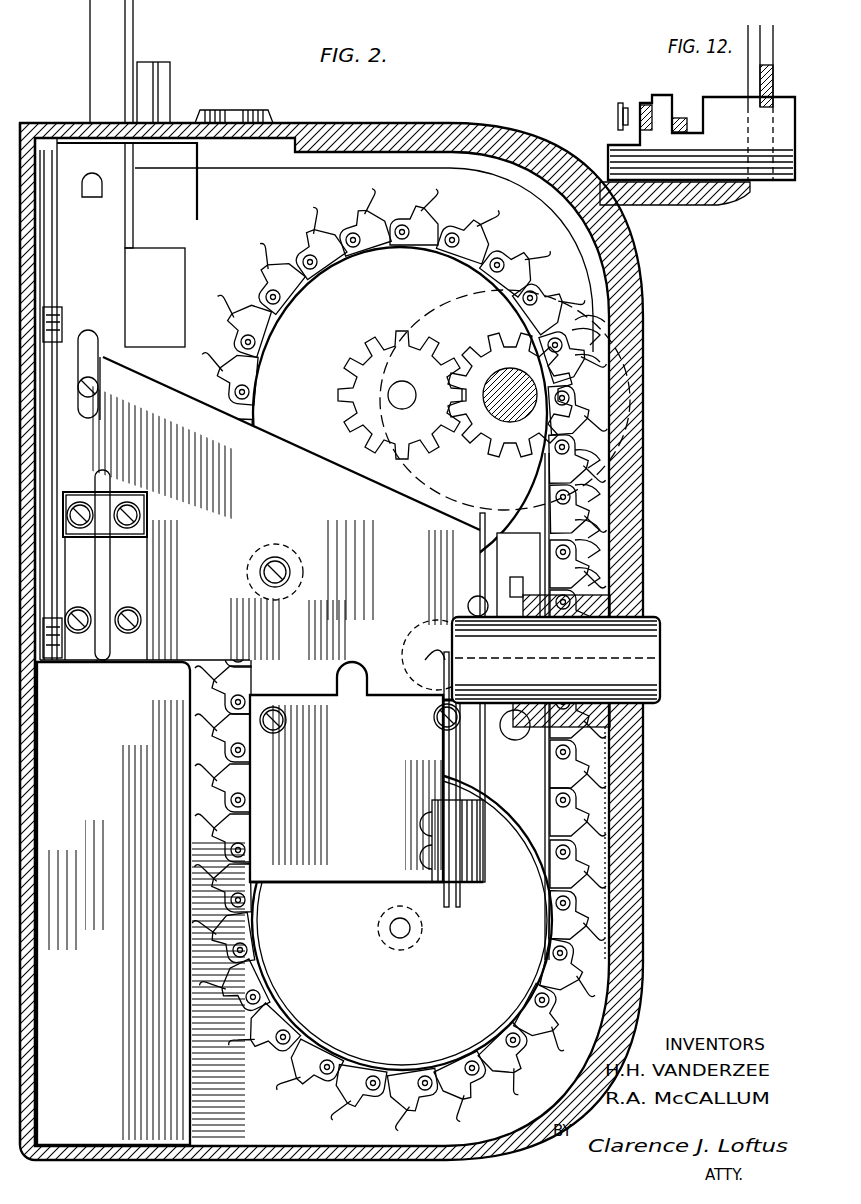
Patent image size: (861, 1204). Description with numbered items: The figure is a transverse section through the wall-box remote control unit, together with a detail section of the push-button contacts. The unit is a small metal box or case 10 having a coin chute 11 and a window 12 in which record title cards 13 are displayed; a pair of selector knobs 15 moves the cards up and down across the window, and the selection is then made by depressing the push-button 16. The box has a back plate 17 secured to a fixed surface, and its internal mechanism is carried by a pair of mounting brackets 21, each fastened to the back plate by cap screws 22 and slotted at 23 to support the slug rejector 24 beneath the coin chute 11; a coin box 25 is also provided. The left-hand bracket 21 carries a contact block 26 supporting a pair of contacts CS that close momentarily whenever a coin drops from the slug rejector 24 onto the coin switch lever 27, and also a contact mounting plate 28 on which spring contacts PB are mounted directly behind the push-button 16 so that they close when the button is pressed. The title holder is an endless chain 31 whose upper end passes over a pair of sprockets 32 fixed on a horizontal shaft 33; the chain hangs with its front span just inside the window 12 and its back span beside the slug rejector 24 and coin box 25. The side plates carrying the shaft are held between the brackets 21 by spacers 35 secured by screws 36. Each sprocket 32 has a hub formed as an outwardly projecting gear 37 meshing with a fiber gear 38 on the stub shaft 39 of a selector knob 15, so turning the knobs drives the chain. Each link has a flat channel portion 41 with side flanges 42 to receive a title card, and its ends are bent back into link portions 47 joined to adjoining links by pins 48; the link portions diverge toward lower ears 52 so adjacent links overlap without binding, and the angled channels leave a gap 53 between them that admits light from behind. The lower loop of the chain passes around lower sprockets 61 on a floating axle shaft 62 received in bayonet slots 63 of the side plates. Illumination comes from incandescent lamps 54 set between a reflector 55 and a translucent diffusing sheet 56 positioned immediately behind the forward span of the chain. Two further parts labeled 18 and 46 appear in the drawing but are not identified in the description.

In FIG. 2, the metal box or case 10 is at (618, 246).
In FIG. 12, the metal box or case 10 is at (700, 205).
In FIG. 2, the coin chute 11 is at (90, 33).
In FIG. 2, the window 12 is at (622, 766).
In FIG. 2, the record title cards 13 is at (592, 440).
In FIG. 2, the selector knobs 15 is at (386, 490).
In FIG. 2, the push-button 16 is at (652, 645).
In FIG. 12, the push-button 16 is at (773, 182).
In FIG. 2, the back plate 17 is at (35, 816).
In FIG. 2, the boss 18 is at (234, 118).
In FIG. 2, the mounting brackets 21 is at (210, 561).
In FIG. 2, the cap screws 22 is at (55, 684).
In FIG. 2, the slot 23 is at (98, 392).
In FIG. 2, the slug rejector 24 is at (112, 232).
In FIG. 2, the coin box 25 is at (141, 903).
In FIG. 2, the contact block 26 is at (130, 494).
In FIG. 2, the coin switch lever 27 is at (100, 685).
In FIG. 2, the contact mounting plate 28 is at (310, 880).
In FIG. 2, the endless chain 31 is at (372, 210).
In FIG. 2, the sprockets 32 is at (395, 289).
In FIG. 2, the horizontal shaft 33 is at (398, 395).
In FIG. 2, the spacers 35 is at (303, 572).
In FIG. 2, the screws 36 is at (282, 556).
In FIG. 2, the gear 37 is at (374, 342).
In FIG. 2, the fiber gears 38 is at (486, 338).
In FIG. 2, the stub shafts 39 is at (496, 422).
In FIG. 2, the flat channel portion 41 is at (592, 572).
In FIG. 2, the side flanges 42 is at (592, 530).
In FIG. 2, the cam finger 46 is at (592, 458).
In FIG. 2, the link portions 47 is at (556, 328).
In FIG. 2, the pins 48 is at (610, 292).
In FIG. 2, the lower ears 52 is at (580, 358).
In FIG. 2, the gap 53 is at (592, 545).
In FIG. 2, the incandescent lamps 54 is at (500, 740).
In FIG. 2, the reflector 55 is at (510, 857).
In FIG. 2, the translucent diffusing sheet 56 is at (545, 847).
In FIG. 2, the lower sprockets 61 is at (446, 1032).
In FIG. 2, the floating axle shaft 62 is at (410, 928).
In FIG. 2, the bayonet slots 63 is at (392, 942).
In FIG. 2, the spring contacts PB is at (428, 648).
In FIG. 12, the spring contacts PB is at (612, 113).
In FIG. 2, the contacts CS is at (108, 642).